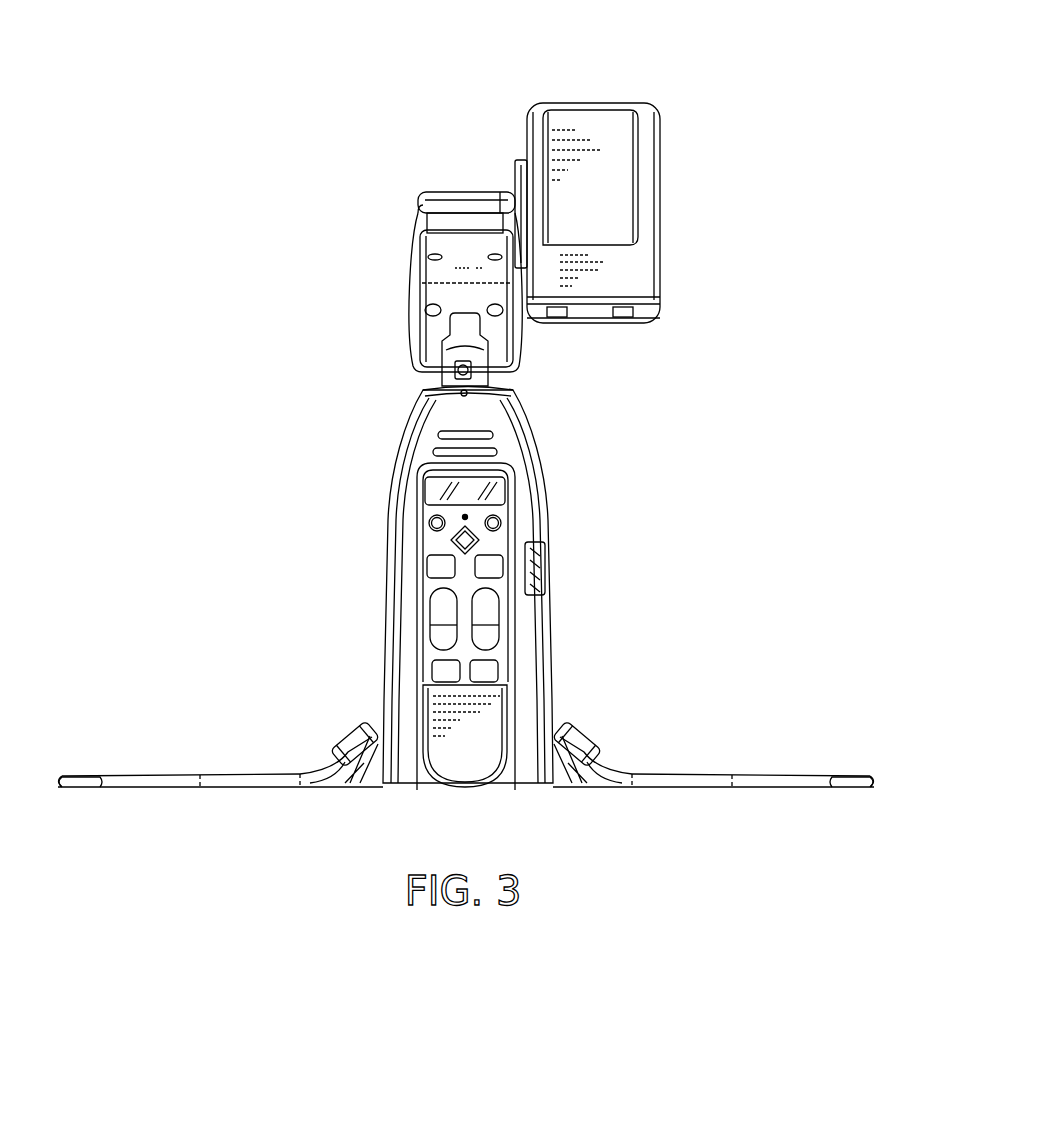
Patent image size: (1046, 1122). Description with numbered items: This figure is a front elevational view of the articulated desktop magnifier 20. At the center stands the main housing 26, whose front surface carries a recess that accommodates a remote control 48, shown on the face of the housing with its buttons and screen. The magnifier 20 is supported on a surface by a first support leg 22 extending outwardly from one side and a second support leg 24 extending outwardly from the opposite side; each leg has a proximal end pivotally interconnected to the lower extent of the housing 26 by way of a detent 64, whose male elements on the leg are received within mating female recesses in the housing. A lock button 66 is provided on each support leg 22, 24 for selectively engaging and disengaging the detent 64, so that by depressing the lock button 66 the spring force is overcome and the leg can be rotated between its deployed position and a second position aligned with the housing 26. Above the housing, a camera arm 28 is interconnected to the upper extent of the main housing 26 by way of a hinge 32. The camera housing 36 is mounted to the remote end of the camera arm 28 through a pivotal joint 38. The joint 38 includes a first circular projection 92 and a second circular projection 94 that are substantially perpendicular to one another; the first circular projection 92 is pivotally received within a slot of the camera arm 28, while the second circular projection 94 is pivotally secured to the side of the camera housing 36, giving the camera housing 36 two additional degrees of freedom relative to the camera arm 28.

The desktop magnifier 20 is at (705, 100).
The first support leg 22 is at (773, 780).
The second support leg 24 is at (193, 778).
The main housing 26 is at (537, 508).
The camera arm 28 is at (412, 283).
The hinge 32 is at (487, 377).
The camera housing 36 is at (652, 260).
The joint 38 is at (448, 208).
The remote control 48 is at (452, 759).
The detent 64 is at (352, 780).
The lock button 66 is at (343, 747).
The first circular projection 92 is at (423, 205).
The second circular projection 94 is at (509, 176).